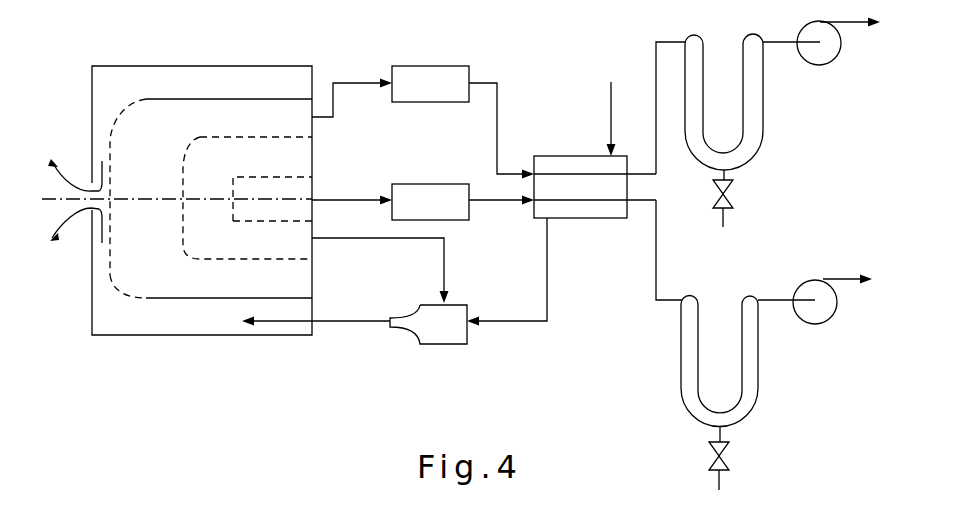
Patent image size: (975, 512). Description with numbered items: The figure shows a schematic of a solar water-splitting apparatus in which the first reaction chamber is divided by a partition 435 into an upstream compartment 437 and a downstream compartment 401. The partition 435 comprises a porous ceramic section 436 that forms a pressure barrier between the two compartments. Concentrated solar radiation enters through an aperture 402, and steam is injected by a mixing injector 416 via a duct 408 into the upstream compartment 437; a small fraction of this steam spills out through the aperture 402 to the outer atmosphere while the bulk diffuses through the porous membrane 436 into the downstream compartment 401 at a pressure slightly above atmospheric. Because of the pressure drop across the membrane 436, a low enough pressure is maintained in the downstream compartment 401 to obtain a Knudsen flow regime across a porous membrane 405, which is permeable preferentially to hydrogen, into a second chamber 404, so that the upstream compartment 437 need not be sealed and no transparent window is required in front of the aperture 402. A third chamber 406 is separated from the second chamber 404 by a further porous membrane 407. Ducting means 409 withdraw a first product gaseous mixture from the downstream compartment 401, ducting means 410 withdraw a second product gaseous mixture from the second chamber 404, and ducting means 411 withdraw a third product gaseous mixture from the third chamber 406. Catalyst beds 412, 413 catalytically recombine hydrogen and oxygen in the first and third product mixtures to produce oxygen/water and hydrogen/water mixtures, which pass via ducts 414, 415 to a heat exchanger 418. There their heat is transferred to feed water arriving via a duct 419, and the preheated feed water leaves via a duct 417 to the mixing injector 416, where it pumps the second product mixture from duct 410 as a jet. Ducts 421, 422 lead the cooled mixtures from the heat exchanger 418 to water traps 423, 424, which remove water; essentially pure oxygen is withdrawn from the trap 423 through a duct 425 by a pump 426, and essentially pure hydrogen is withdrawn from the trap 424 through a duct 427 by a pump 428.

The downstream compartment 401 is at (227, 110).
The aperture 402 is at (90, 182).
The second chamber 404 is at (270, 148).
The porous membrane 405 is at (218, 137).
The third chamber 406 is at (236, 222).
The porous membrane 407 is at (245, 177).
The ducting means 408 is at (362, 323).
The ducting means 409 is at (345, 82).
The ducting means 410 is at (370, 240).
The ducting means 411 is at (343, 197).
The catalyst bed 412 is at (425, 66).
The catalyst bed 413 is at (421, 183).
The duct 414 is at (498, 107).
The duct 415 is at (497, 203).
The mixing injector 416 is at (445, 345).
The duct 417 is at (547, 288).
The heat exchanger 418 is at (575, 155).
The duct 419 is at (609, 101).
The duct 421 is at (656, 80).
The duct 422 is at (656, 238).
The water trap 423 is at (763, 107).
The water trap 424 is at (758, 370).
The duct 425 is at (785, 48).
The pump 426 is at (832, 63).
The duct 427 is at (778, 300).
The pump 428 is at (812, 278).
The partition 435 is at (265, 95).
The porous ceramic section 436 is at (135, 100).
The upstream compartment 437 is at (145, 78).